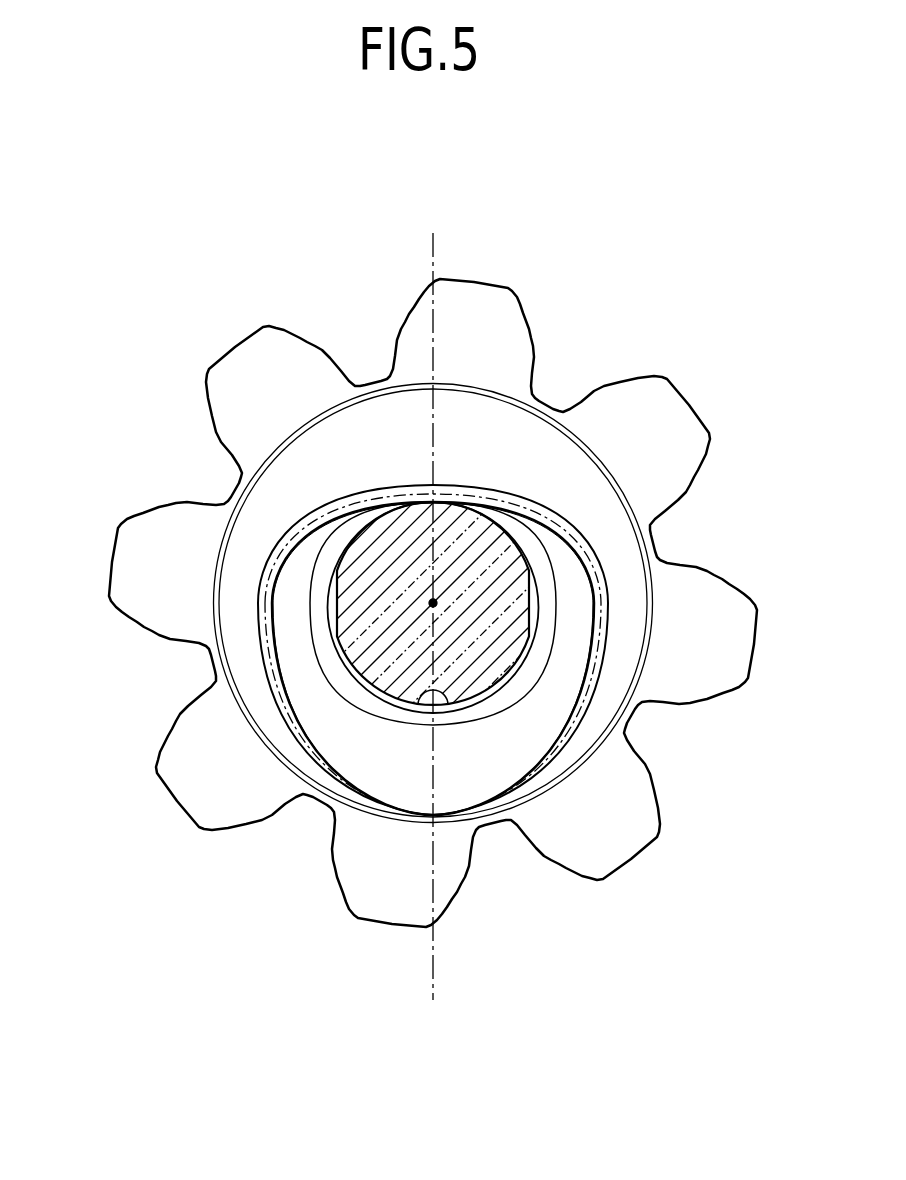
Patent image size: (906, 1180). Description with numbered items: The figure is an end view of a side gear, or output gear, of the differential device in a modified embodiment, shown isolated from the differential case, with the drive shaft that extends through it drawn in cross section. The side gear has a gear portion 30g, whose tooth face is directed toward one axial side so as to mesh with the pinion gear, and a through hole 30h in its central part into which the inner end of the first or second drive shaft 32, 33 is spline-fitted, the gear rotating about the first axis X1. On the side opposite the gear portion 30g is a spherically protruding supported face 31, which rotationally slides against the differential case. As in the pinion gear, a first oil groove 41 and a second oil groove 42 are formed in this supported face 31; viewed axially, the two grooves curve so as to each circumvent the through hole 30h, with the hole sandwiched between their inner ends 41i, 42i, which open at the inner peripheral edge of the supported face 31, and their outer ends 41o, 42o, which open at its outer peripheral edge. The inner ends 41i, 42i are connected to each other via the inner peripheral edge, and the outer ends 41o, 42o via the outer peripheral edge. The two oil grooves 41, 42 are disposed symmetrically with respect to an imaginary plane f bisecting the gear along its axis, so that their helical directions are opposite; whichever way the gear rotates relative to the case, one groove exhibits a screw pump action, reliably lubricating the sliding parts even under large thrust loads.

The gear portion 30g is at (190, 817).
The through hole 30h is at (407, 700).
The supported face 31 is at (292, 467).
The first drive shaft 32 is at (357, 684).
The second drive shaft 33 is at (410, 623).
The first oil groove 41 is at (504, 705).
The inner end of first oil groove 41i is at (436, 501).
The outer end of first oil groove 41o is at (457, 818).
The second oil groove 42 is at (371, 701).
The inner end of second oil groove 42i is at (430, 501).
The outer end of second oil groove 42o is at (405, 818).
The first axis X1 is at (433, 603).
The imaginary plane f is at (433, 252).